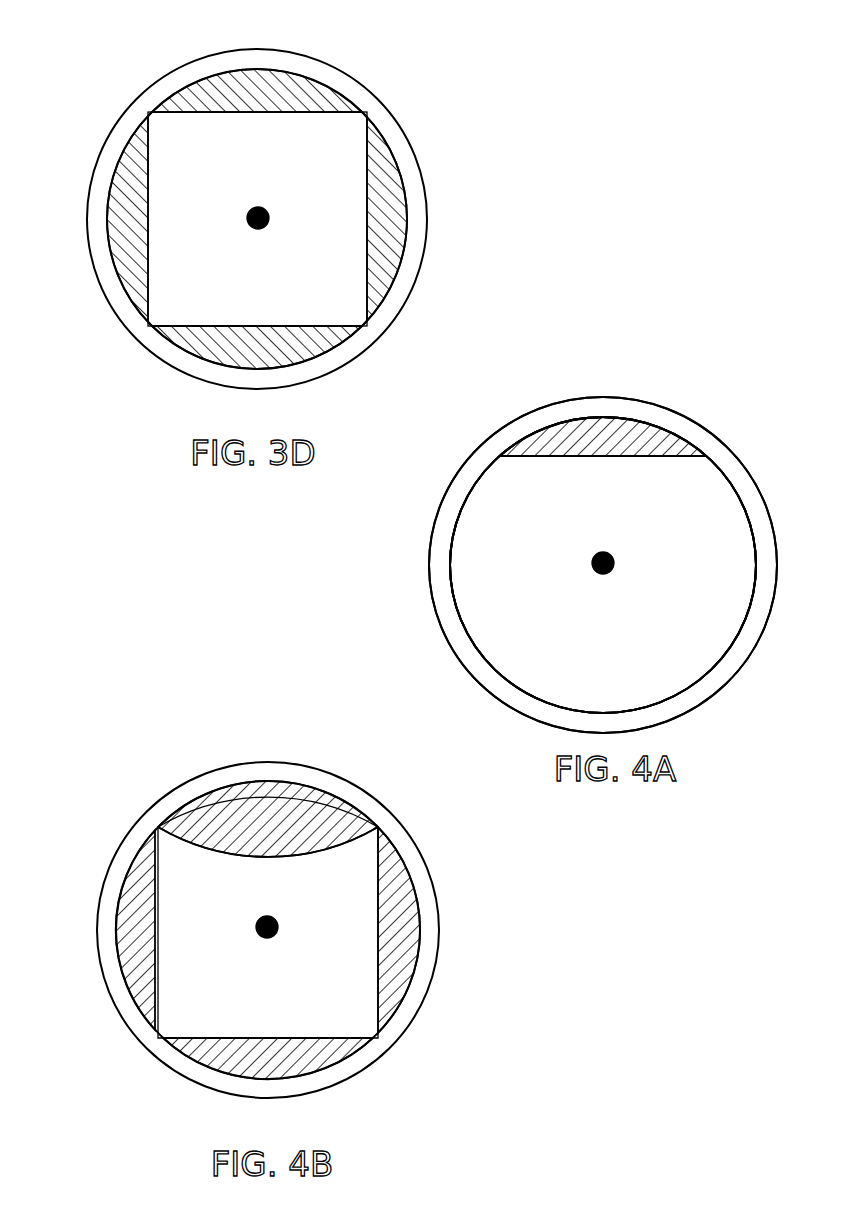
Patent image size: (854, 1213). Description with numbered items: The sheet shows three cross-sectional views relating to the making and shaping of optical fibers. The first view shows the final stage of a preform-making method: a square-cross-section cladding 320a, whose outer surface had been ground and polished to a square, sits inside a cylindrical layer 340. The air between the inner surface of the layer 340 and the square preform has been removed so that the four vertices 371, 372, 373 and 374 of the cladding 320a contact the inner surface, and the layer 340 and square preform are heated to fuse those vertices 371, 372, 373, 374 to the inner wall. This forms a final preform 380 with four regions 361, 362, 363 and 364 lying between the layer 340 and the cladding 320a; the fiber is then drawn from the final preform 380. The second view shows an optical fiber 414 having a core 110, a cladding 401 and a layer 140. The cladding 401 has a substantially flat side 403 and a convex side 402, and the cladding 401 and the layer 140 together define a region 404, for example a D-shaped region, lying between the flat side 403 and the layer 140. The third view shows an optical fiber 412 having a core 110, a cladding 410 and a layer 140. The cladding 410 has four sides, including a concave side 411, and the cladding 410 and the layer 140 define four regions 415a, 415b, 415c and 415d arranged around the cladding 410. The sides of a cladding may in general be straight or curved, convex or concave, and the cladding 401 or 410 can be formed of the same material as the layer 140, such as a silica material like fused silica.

In FIG. 3D, the final preform 380 is at (298, 220).
In FIG. 3D, the layer 340 is at (202, 72).
In FIG. 3D, the region 364 is at (277, 80).
In FIG. 3D, the region 361 is at (393, 215).
In FIG. 3D, the region 362 is at (247, 355).
In FIG. 3D, the region 363 is at (128, 227).
In FIG. 3D, the vertex 373 is at (148, 115).
In FIG. 3D, the vertex 374 is at (367, 112).
In FIG. 3D, the vertex 371 is at (363, 323).
In FIG. 3D, the vertex 372 is at (148, 328).
In FIG. 3D, the cladding 320a is at (200, 287).
In FIG. 4A, the optical fiber 414 is at (604, 542).
In FIG. 4A, the layer 140 is at (560, 415).
In FIG. 4B, the layer 140 is at (303, 775).
In FIG. 4A, the convex side 402 is at (738, 482).
In FIG. 4A, the region 404 is at (615, 422).
In FIG. 4A, the cladding 401 is at (720, 562).
In FIG. 4A, the substantially flat side 403 is at (677, 440).
In FIG. 4A, the core 110 is at (590, 562).
In FIG. 4B, the core 110 is at (257, 930).
In FIG. 4B, the optical fiber 412 is at (298, 923).
In FIG. 4B, the region 415a is at (210, 807).
In FIG. 4B, the concave side 411 is at (345, 815).
In FIG. 4B, the region 415b is at (140, 868).
In FIG. 4B, the region 415d is at (393, 977).
In FIG. 4B, the region 415c is at (260, 1065).
In FIG. 4B, the cladding 410 is at (340, 905).